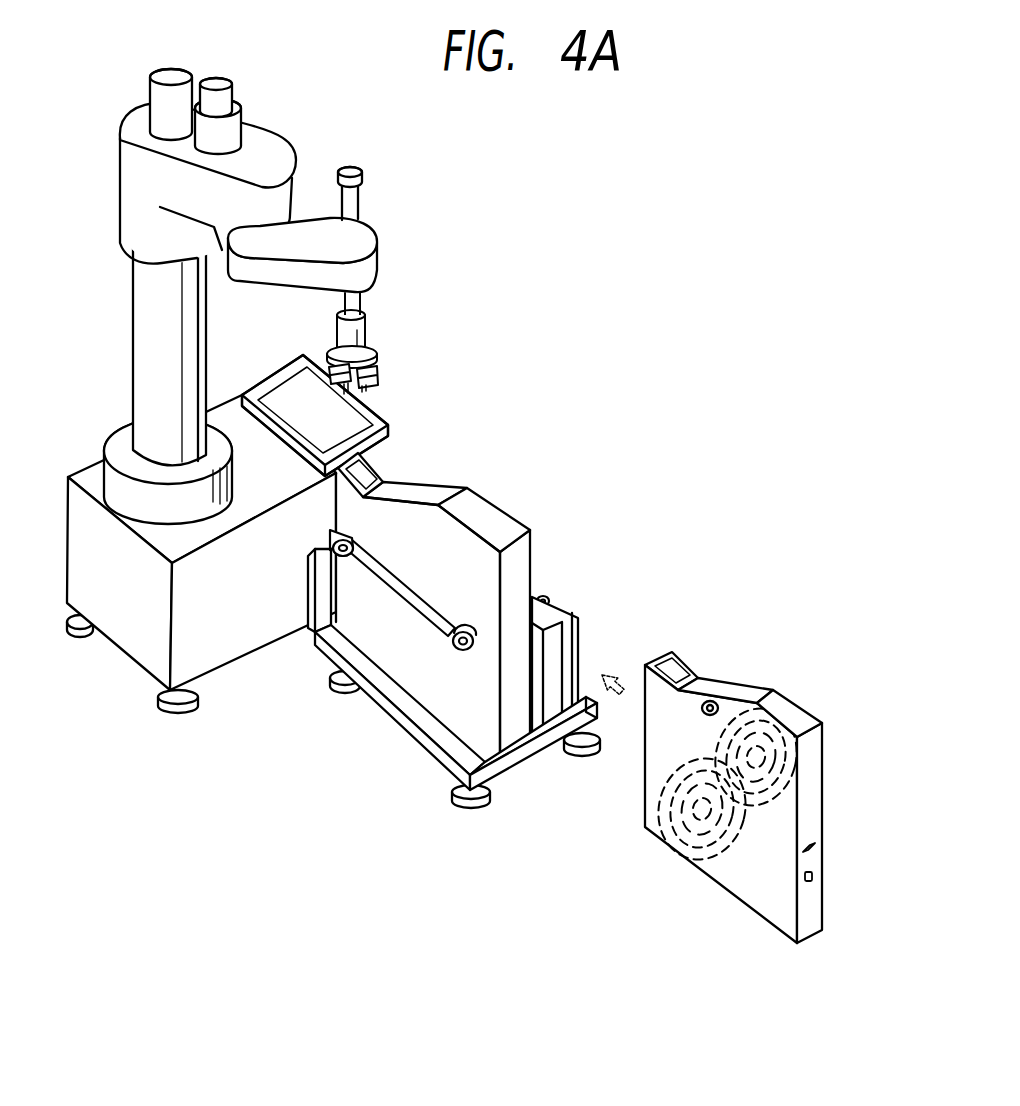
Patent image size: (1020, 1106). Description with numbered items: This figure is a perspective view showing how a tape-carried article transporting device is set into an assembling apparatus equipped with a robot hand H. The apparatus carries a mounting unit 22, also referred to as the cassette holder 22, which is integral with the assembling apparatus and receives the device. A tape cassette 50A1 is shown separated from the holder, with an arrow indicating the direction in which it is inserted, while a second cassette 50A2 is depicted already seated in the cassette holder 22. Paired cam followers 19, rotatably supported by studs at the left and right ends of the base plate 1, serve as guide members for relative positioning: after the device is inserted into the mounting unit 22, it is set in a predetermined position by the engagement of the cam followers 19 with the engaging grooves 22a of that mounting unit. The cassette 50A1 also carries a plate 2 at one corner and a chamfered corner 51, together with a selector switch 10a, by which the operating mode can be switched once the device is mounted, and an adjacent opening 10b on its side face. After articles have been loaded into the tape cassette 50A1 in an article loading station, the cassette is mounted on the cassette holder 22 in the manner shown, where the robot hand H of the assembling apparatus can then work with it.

The base plate 1 is at (147, 658).
The identification plate 2 is at (368, 476).
The cam followers 19 is at (309, 564).
The mounting unit 22 is at (577, 638).
The engaging grooves 22a is at (547, 600).
The tape cassette 50A1 is at (823, 800).
The cassette 50A2 is at (477, 502).
The chamfered corner of cassette 51 is at (807, 712).
The selector switch 10a is at (813, 847).
The hole 10b is at (815, 882).
The robot hand H is at (385, 332).